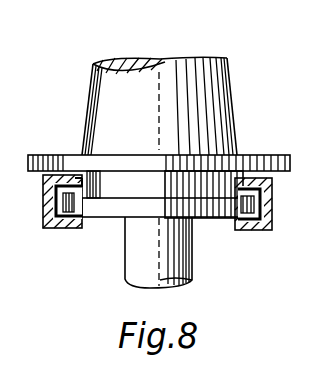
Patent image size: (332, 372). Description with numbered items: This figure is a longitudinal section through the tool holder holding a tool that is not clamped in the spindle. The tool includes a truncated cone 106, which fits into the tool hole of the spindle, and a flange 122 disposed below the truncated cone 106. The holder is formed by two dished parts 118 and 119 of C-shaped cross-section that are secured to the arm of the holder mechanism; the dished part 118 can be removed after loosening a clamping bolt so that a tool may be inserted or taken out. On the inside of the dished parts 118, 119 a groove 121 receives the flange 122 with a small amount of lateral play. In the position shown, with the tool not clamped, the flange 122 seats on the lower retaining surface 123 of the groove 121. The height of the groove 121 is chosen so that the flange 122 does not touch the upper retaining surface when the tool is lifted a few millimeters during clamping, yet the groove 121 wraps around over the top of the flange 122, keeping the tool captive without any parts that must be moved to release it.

The truncated cone 106 is at (150, 86).
The dished part 118 is at (43, 213).
The dished part 119 is at (274, 200).
The groove 121 is at (66, 190).
The flange 122 is at (108, 207).
The lower retaining surface 123 is at (249, 219).